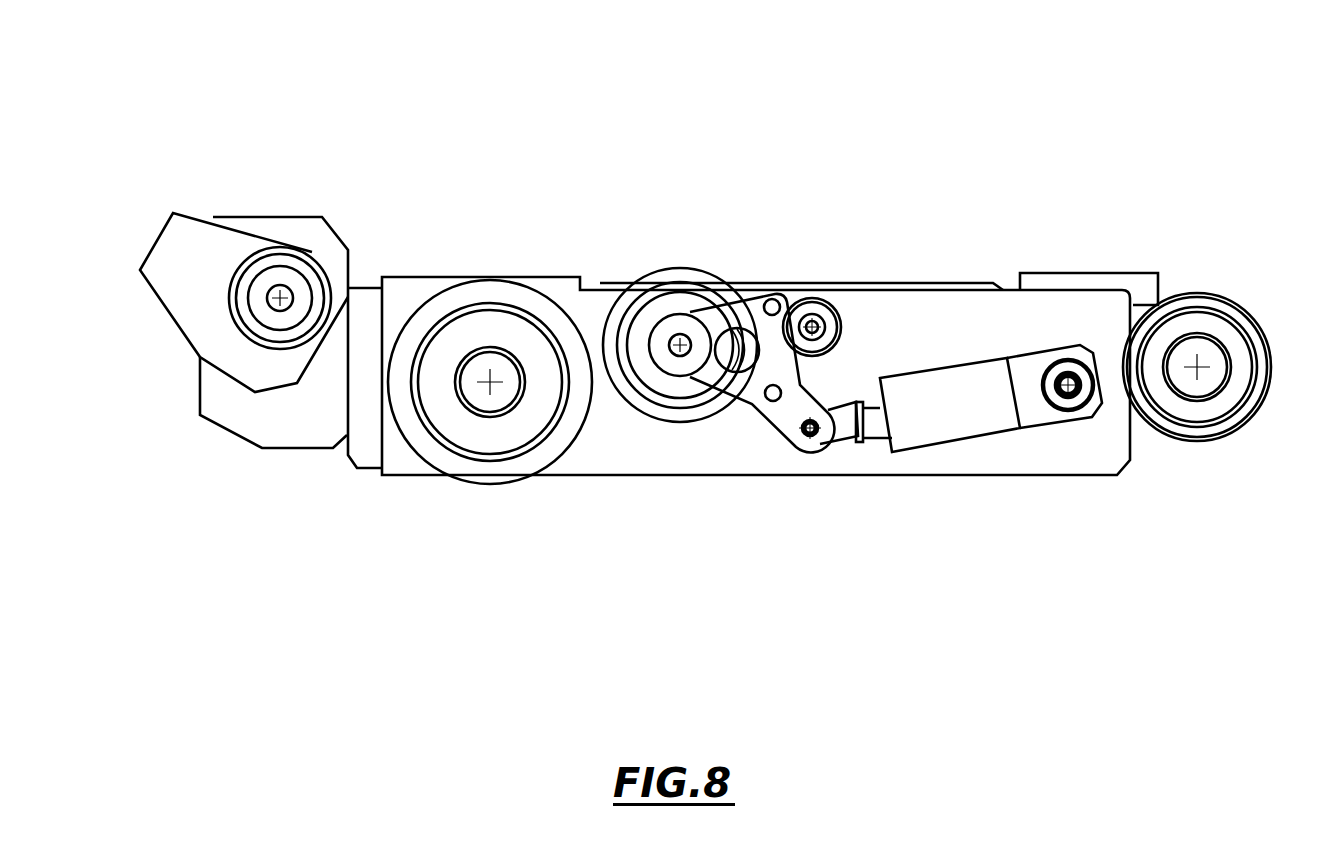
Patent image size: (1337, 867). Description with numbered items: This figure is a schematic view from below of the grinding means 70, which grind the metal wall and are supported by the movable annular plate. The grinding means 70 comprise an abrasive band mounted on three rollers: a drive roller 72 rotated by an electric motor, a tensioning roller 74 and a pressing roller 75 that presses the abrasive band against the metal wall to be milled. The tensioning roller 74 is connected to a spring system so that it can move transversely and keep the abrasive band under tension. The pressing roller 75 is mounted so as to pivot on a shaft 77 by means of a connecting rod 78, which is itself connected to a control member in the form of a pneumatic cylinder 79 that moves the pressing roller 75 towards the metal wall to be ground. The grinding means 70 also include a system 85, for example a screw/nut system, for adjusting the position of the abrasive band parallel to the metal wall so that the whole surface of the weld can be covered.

The grinding means 70 is at (727, 150).
The drive roller 72 is at (485, 475).
The tensioning roller 74 is at (1257, 390).
The pressing roller 75 is at (673, 273).
The shaft 77 is at (837, 283).
The connecting rod 78 is at (742, 283).
The pneumatic cylinder 79 is at (957, 427).
The system for adjusting the position of the abrasive band 85 is at (180, 381).